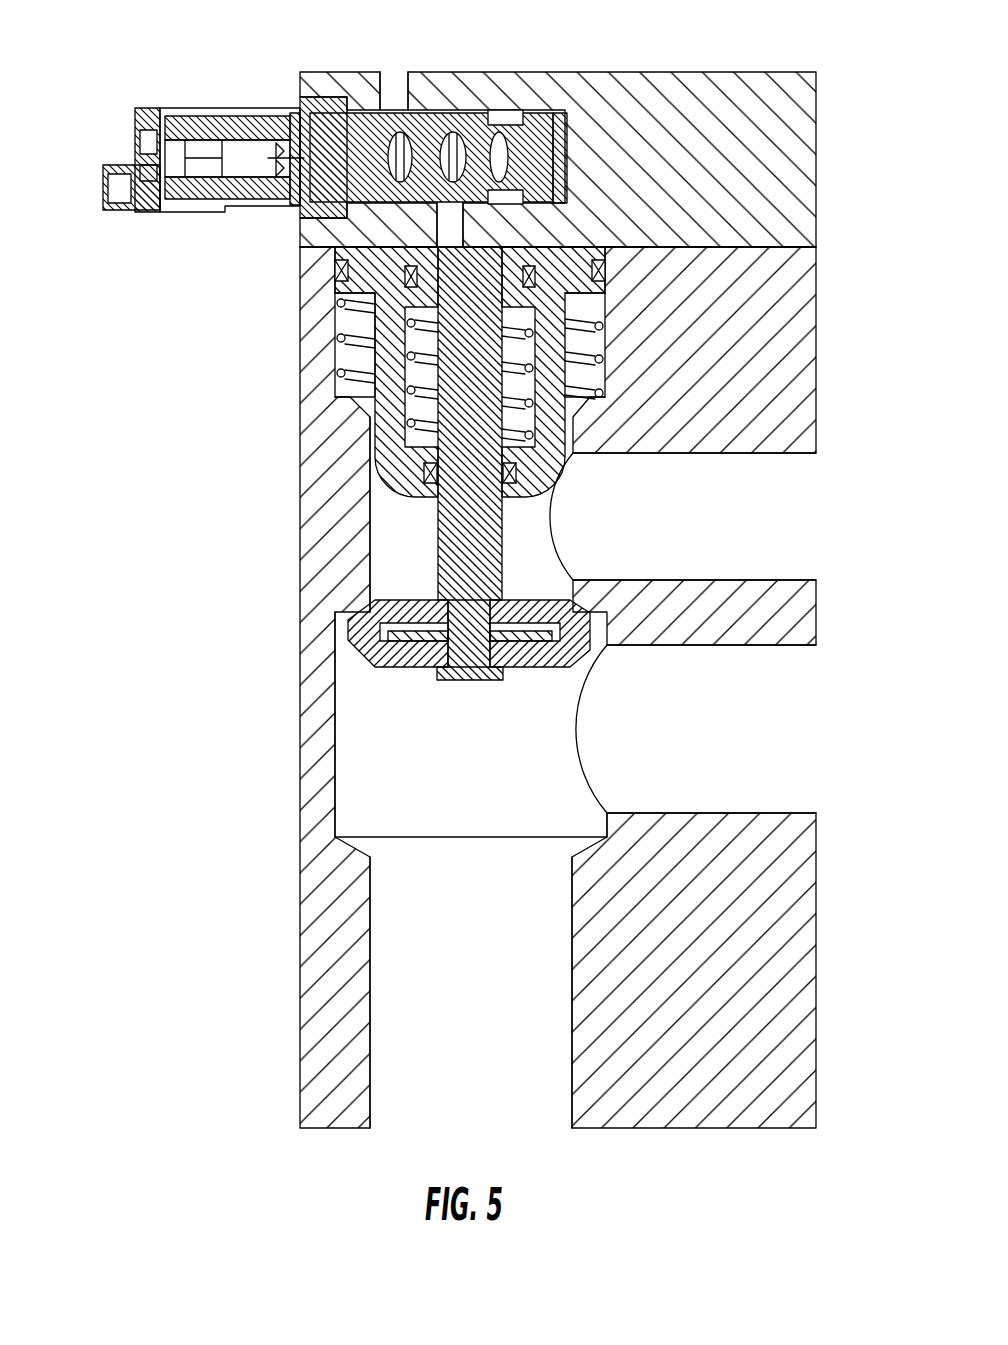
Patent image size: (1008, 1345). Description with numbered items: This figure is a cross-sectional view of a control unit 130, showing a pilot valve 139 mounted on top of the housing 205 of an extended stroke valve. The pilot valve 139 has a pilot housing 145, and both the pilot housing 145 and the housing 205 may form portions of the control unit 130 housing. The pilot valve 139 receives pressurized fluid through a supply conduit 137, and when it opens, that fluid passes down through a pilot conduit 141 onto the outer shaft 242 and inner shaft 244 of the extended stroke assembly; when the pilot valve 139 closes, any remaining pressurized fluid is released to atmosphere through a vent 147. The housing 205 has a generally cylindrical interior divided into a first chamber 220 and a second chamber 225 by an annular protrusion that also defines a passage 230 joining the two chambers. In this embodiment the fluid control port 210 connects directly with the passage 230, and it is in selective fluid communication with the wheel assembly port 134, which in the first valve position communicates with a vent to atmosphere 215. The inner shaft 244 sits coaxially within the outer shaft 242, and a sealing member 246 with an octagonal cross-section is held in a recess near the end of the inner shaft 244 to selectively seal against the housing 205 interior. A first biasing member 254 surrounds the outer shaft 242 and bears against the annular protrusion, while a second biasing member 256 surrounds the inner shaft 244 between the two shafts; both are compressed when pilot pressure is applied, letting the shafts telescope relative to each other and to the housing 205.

The control unit 130 is at (105, 462).
The wheel assembly port 134 is at (778, 692).
The supply conduit 137 is at (503, 150).
The pilot valve 139 is at (246, 86).
The pilot conduit 141 is at (451, 213).
The pilot housing 145 is at (797, 133).
The vent 147 is at (393, 72).
The housing 205 is at (790, 370).
The fluid control port 210 is at (768, 497).
The vent to atmosphere 215 is at (552, 935).
The first chamber 220 is at (343, 358).
The second chamber 225 is at (362, 793).
The passage 230 is at (383, 558).
The outer shaft 242 is at (390, 450).
The inner shaft 244 is at (447, 518).
The sealing member 246 is at (343, 632).
The first biasing member 254 is at (341, 305).
The second biasing member 256 is at (600, 325).